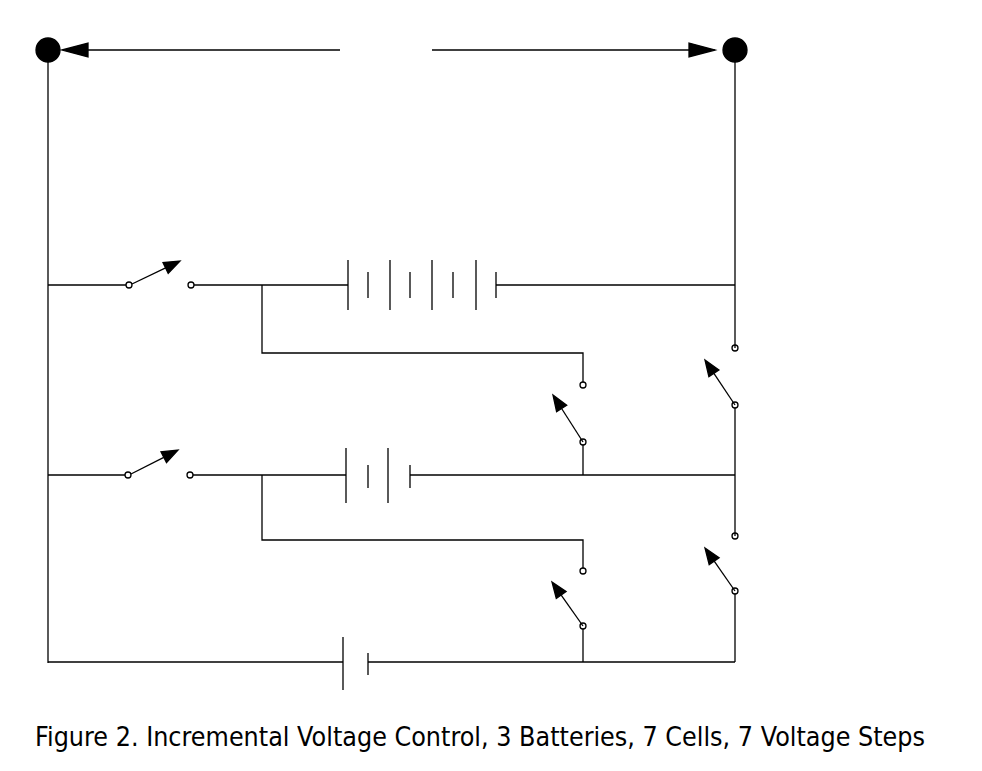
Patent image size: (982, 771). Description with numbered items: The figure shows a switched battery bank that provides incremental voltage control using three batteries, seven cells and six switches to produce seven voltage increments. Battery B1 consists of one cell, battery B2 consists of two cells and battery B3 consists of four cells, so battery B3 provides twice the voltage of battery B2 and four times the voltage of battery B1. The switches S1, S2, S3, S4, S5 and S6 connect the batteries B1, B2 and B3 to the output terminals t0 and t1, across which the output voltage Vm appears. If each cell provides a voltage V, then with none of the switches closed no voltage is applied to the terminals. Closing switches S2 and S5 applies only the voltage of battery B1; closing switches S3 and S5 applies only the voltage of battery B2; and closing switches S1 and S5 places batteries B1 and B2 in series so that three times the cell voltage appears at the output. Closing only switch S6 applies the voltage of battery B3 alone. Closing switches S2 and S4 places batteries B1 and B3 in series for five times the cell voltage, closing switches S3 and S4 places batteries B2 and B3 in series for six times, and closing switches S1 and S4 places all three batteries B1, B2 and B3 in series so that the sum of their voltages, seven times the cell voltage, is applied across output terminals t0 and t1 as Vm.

The output terminal t0 is at (49, 333).
The output terminal t1 is at (729, 175).
The output voltage Vm is at (388, 50).
The battery B1 is at (391, 640).
The battery B2 is at (464, 454).
The battery B3 is at (464, 260).
The switch S1 is at (424, 568).
The switch S2 is at (761, 597).
The switch S3 is at (120, 501).
The switch S4 is at (424, 380).
The switch S5 is at (765, 440).
The switch S6 is at (121, 311).